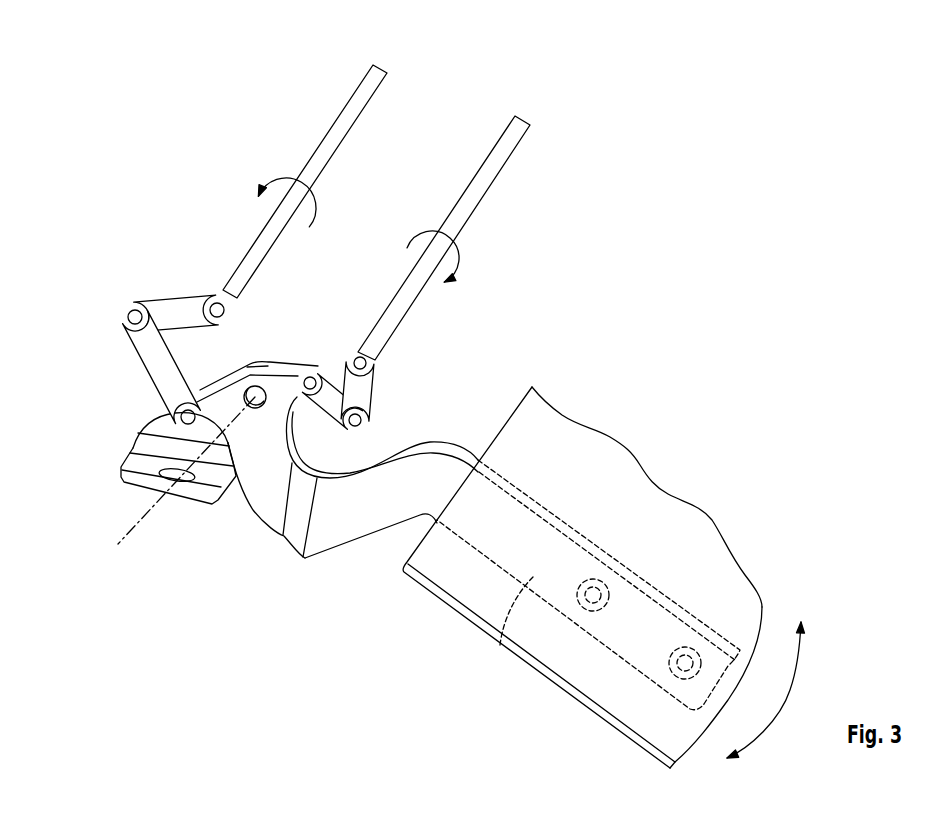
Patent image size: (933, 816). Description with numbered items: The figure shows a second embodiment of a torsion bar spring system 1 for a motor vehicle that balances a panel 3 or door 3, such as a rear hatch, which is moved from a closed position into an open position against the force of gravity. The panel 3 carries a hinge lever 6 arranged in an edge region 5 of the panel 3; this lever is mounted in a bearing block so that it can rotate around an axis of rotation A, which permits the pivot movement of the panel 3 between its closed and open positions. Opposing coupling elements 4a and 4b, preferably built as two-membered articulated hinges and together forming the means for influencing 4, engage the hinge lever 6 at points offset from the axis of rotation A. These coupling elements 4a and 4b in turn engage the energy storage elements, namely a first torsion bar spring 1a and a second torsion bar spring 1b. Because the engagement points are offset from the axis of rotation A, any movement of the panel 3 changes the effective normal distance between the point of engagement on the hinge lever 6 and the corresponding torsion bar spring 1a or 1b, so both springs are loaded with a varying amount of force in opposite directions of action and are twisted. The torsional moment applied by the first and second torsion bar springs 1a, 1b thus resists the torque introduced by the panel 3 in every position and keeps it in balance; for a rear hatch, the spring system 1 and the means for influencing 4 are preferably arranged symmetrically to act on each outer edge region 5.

The torsion bar spring system 1 is at (457, 98).
The first torsion bar spring 1a is at (352, 111).
The second torsion bar spring 1b is at (499, 157).
The panel or door 3 is at (703, 563).
The means for influencing 4 is at (256, 408).
The first coupling element 4a is at (153, 298).
The second coupling element 4b is at (371, 408).
The edge region 5 is at (585, 640).
The hinge lever 6 is at (500, 645).
The axis of rotation A is at (145, 513).